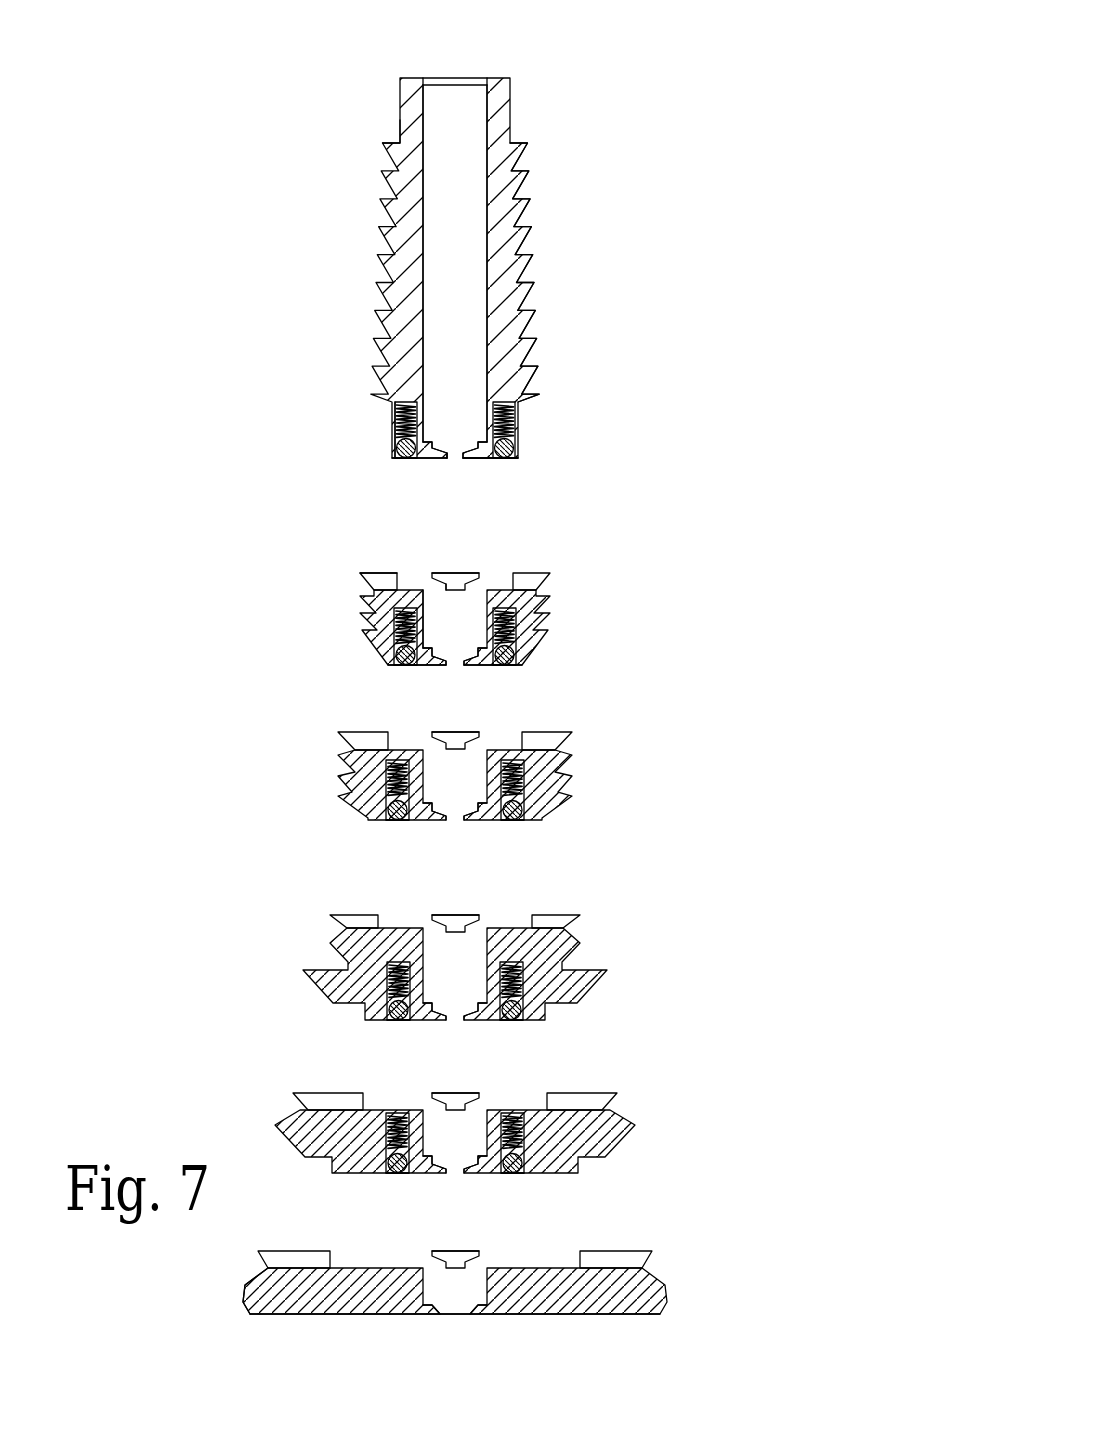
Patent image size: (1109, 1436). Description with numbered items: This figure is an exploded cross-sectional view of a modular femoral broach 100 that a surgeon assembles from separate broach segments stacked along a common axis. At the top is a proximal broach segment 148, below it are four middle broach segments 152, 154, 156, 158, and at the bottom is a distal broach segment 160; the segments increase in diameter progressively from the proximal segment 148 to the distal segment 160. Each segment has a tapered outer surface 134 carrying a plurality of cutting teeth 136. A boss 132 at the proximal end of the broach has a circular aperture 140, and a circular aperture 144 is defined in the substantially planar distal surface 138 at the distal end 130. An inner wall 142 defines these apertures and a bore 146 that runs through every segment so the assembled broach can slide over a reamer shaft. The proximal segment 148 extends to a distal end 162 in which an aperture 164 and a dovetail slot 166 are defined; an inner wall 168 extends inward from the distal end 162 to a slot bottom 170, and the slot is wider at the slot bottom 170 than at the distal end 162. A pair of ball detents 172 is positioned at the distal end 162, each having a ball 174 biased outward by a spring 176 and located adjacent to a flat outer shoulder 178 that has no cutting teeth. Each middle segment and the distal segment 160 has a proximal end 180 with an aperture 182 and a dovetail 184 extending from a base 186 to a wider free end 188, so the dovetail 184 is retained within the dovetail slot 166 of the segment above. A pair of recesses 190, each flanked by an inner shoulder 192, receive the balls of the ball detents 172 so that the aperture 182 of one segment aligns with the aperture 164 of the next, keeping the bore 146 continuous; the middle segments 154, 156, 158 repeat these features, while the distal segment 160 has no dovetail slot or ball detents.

The modular femoral broach 100 is at (826, 71).
The distal end 130 is at (710, 1318).
The boss 132 is at (500, 118).
The tapered outer surface 134 is at (392, 140).
The cutting teeth 136 is at (372, 210).
The distal surface 138 is at (268, 1322).
The circular aperture 140 is at (408, 78).
The inner wall 142 is at (478, 88).
The circular aperture 144 is at (440, 1318).
The bore 146 is at (455, 72).
The proximal broach segment 148 is at (668, 232).
The middle broach segment 152 is at (718, 588).
The middle broach segment 154 is at (695, 790).
The middle broach segment 156 is at (705, 958).
The middle broach segment 158 is at (735, 1115).
The distal broach segment 160 is at (770, 1250).
The distal end 162 is at (612, 478).
The aperture 164 is at (432, 463).
The dovetail slot 166 is at (458, 470).
The inner wall 168 is at (450, 462).
The slot bottom 170 is at (490, 462).
The ball detent 172 is at (383, 400).
The ball 174 is at (395, 445).
The spring 176 is at (400, 430).
The outer shoulder 178 is at (395, 455).
The proximal end 180 is at (250, 575).
The aperture 182 is at (480, 585).
The dovetail 184 is at (455, 575).
The base 186 is at (425, 585).
The free end 188 is at (445, 583).
The recess 190 is at (410, 590).
The inner shoulder 192 is at (375, 573).